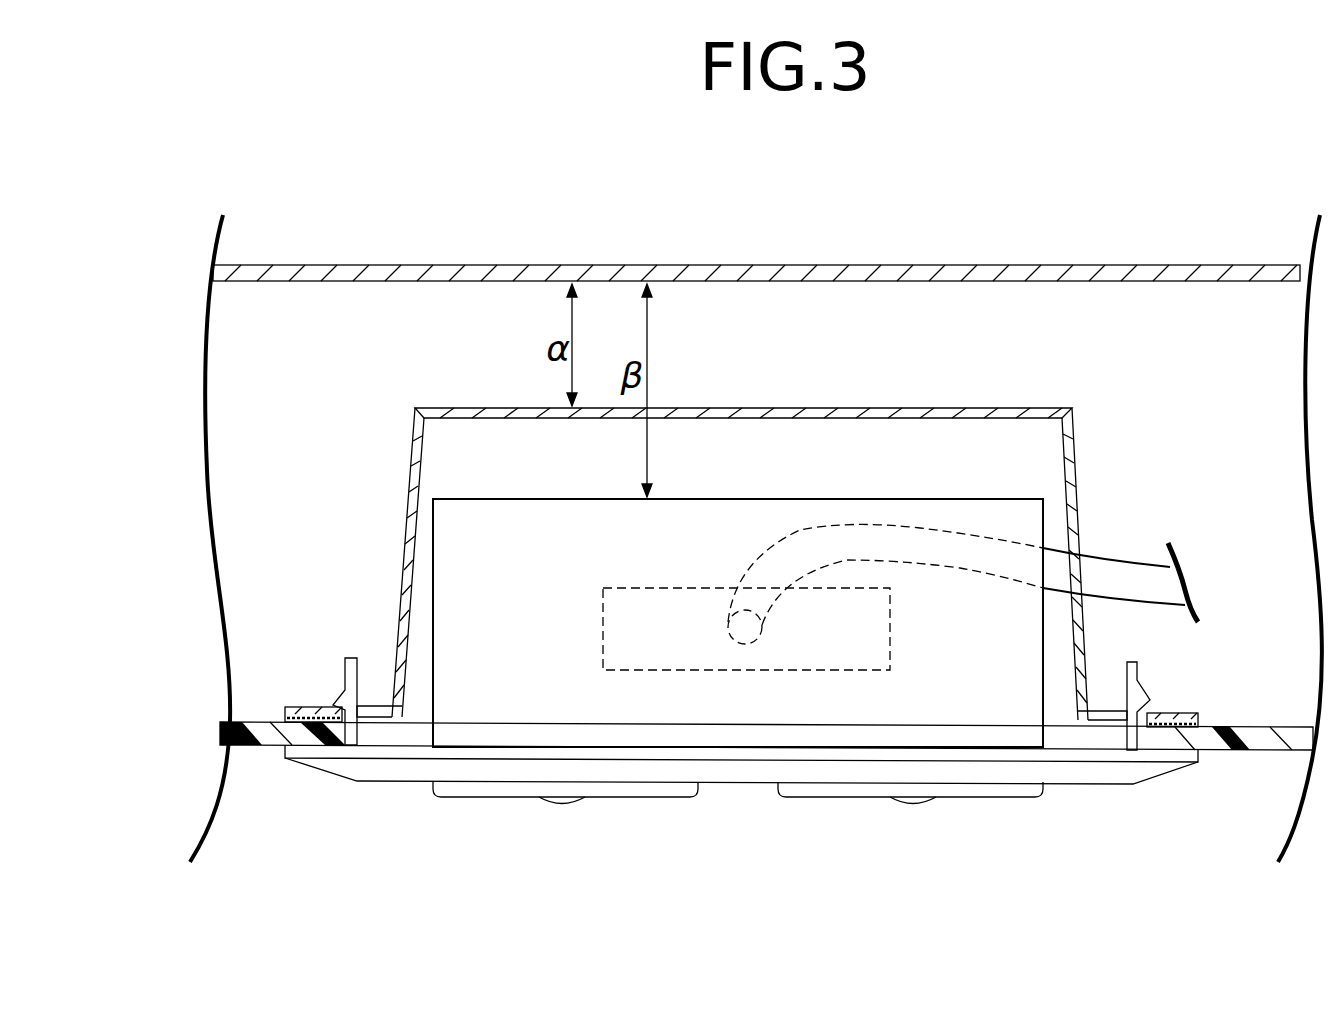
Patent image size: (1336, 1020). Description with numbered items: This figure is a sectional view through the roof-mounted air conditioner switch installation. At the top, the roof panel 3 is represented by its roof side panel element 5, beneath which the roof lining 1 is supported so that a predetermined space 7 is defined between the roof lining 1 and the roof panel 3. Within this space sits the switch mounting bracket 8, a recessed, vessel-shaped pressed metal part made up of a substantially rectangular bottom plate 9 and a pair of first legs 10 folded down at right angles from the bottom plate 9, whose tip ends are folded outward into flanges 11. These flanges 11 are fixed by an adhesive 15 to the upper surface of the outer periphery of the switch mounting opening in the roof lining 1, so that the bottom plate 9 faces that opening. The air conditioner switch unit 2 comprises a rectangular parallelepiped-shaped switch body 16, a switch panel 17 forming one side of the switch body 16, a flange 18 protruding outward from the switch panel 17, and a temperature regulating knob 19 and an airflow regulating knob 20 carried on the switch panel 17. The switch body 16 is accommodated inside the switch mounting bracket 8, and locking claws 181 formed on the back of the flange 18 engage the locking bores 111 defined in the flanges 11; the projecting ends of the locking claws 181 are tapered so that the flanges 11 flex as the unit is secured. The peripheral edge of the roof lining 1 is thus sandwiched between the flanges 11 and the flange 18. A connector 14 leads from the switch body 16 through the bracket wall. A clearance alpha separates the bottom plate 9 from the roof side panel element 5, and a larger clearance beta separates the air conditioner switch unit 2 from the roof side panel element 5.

The roof lining 1 is at (254, 756).
The air conditioner switch unit 2 is at (714, 792).
The roof panel 3 is at (473, 254).
The roof side panel element 5 is at (706, 272).
The space 7 is at (331, 426).
The switch mounting bracket 8 is at (761, 516).
The bottom plate 9 is at (780, 408).
The first legs 10 is at (408, 520).
The flanges 11 is at (297, 698).
The locking bores 111 is at (1115, 648).
The connector 14 is at (668, 588).
The adhesive 15 is at (322, 722).
The switch body 16 is at (520, 520).
The switch panel 17 is at (752, 770).
The flange 18 is at (364, 790).
The locking claws 181 is at (347, 660).
The temperature regulating knob 19 is at (510, 792).
The airflow regulating knob 20 is at (1000, 792).